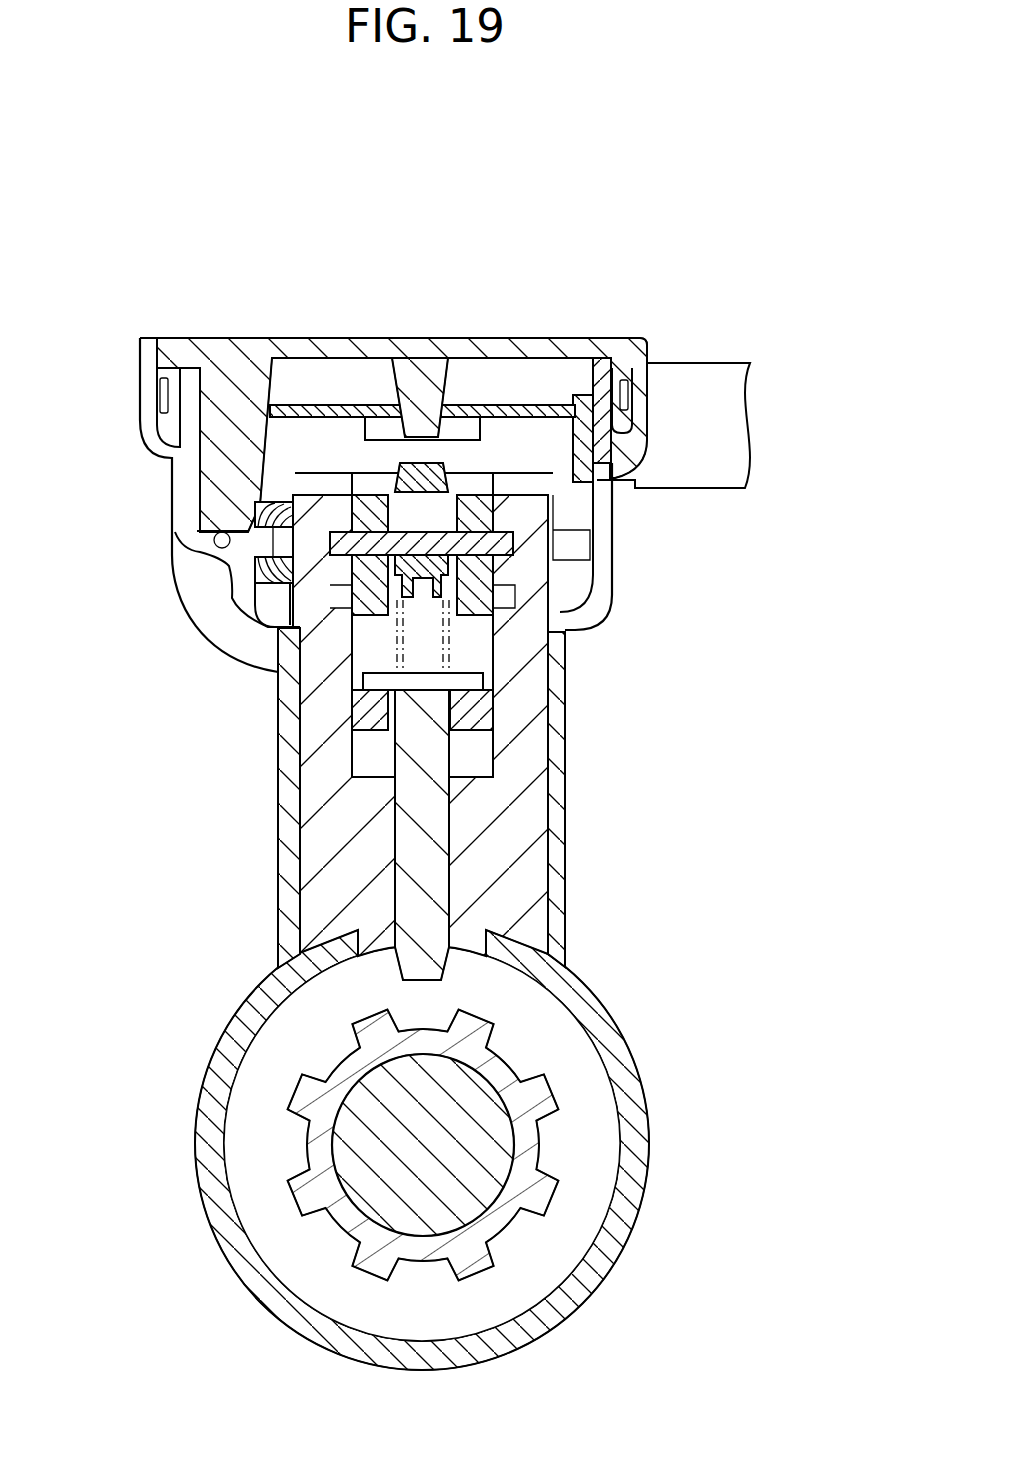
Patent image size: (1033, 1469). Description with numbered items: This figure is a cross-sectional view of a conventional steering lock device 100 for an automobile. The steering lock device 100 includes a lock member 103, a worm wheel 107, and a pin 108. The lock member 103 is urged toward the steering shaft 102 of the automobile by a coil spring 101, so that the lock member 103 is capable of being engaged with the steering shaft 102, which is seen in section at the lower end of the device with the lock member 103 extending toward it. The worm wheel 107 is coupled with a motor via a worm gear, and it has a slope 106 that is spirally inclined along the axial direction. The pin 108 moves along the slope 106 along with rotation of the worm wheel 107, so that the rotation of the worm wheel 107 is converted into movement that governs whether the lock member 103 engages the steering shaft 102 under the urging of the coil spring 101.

The steering lock device 100 is at (500, 290).
The coil spring 101 is at (447, 650).
The steering shaft 102 is at (487, 1148).
The lock member 103 is at (407, 885).
The slope 106 is at (305, 597).
The worm wheel 107 is at (313, 580).
The pin 108 is at (500, 541).